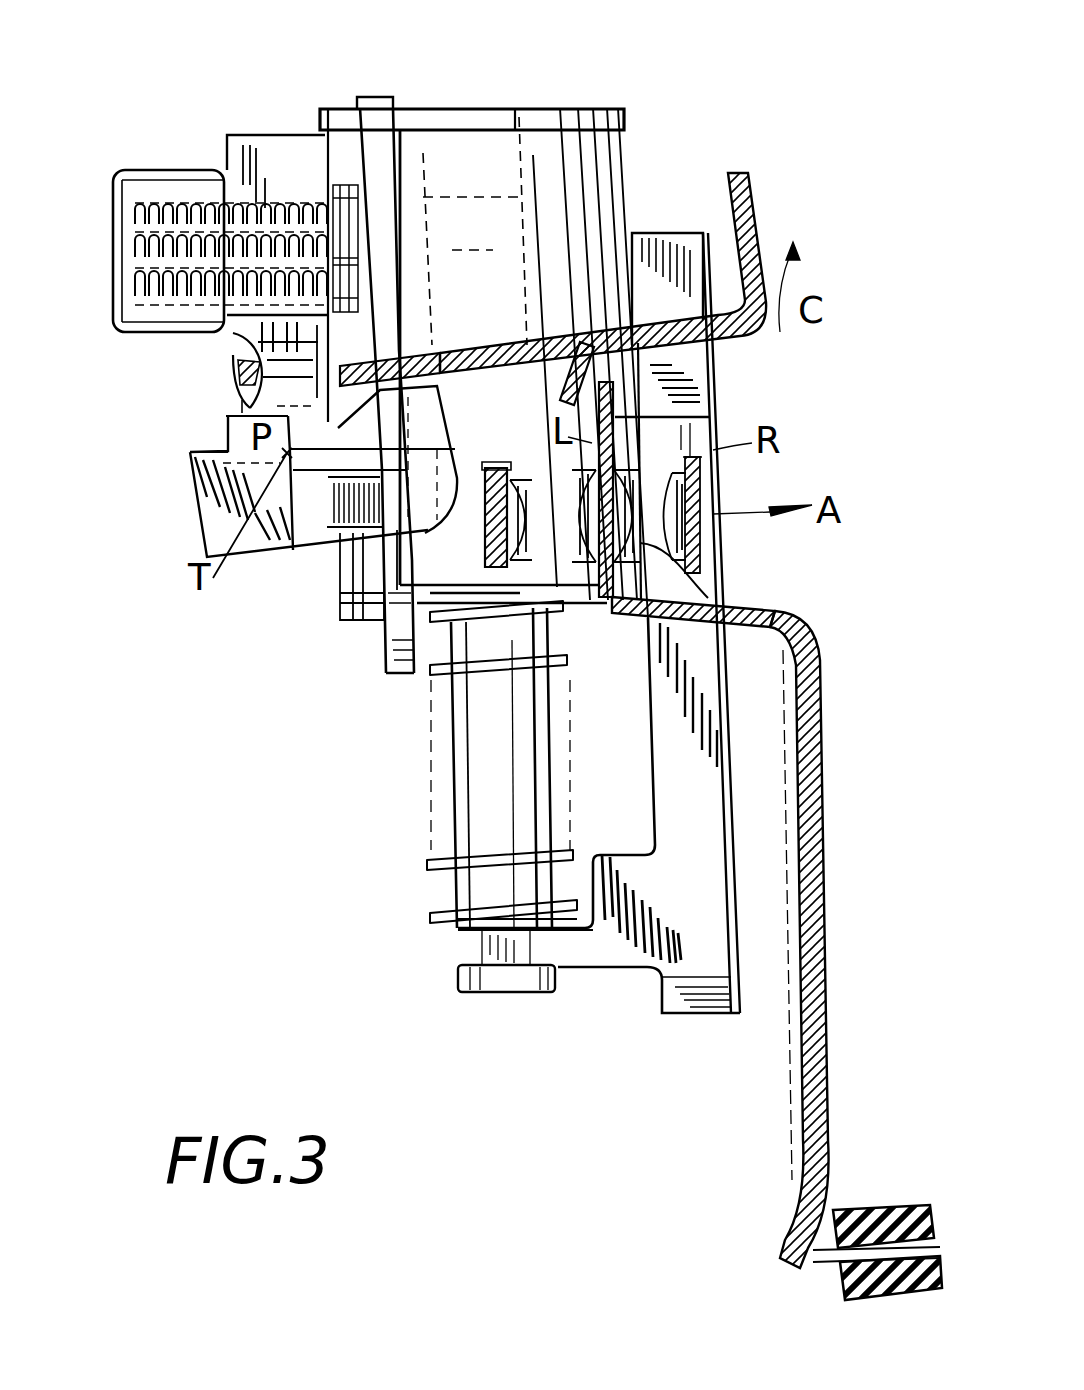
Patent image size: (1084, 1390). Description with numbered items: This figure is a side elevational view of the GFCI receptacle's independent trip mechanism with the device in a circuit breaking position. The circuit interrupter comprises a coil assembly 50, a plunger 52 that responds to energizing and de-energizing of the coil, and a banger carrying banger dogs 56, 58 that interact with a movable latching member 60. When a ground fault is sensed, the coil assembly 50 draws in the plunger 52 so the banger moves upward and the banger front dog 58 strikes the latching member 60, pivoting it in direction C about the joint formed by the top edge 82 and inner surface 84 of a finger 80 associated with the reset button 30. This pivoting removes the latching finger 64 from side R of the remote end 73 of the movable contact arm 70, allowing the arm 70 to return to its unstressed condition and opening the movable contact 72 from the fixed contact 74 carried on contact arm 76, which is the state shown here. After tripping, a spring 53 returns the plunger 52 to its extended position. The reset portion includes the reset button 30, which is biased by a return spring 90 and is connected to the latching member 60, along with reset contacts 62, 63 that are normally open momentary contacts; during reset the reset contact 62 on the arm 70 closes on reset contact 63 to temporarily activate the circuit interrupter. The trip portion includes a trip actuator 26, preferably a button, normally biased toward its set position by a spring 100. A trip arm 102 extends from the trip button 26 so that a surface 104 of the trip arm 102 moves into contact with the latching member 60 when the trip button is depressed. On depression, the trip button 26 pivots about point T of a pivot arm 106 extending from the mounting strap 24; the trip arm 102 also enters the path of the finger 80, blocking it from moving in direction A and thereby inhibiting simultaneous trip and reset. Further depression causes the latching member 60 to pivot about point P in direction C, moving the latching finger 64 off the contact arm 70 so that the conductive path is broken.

The mounting strap 24 is at (381, 97).
The trip actuator 26 is at (190, 512).
The reset button 30 is at (100, 195).
The coil assembly 50 is at (487, 178).
The plunger 52 is at (448, 805).
The spring 53 is at (436, 863).
The banger dog 56 is at (672, 233).
The banger front dog 58 is at (717, 483).
The movable latching member 60 is at (752, 213).
The reset contact 62 is at (735, 598).
The reset contact 63 is at (713, 596).
The latching finger 64 is at (563, 385).
The contact arm 70 is at (840, 874).
The movable contact 72 is at (582, 527).
The remote end 73 is at (645, 415).
The fixed contact 74 is at (525, 480).
The contact arm 76 is at (380, 623).
The finger 80 is at (238, 337).
The top edge 82 is at (236, 386).
The inner surface 84 is at (237, 402).
The return spring 90 is at (128, 284).
The spring 100 is at (330, 520).
The trip arm 102 is at (507, 455).
The surface 104 is at (427, 347).
The pivot arm 106 is at (187, 456).